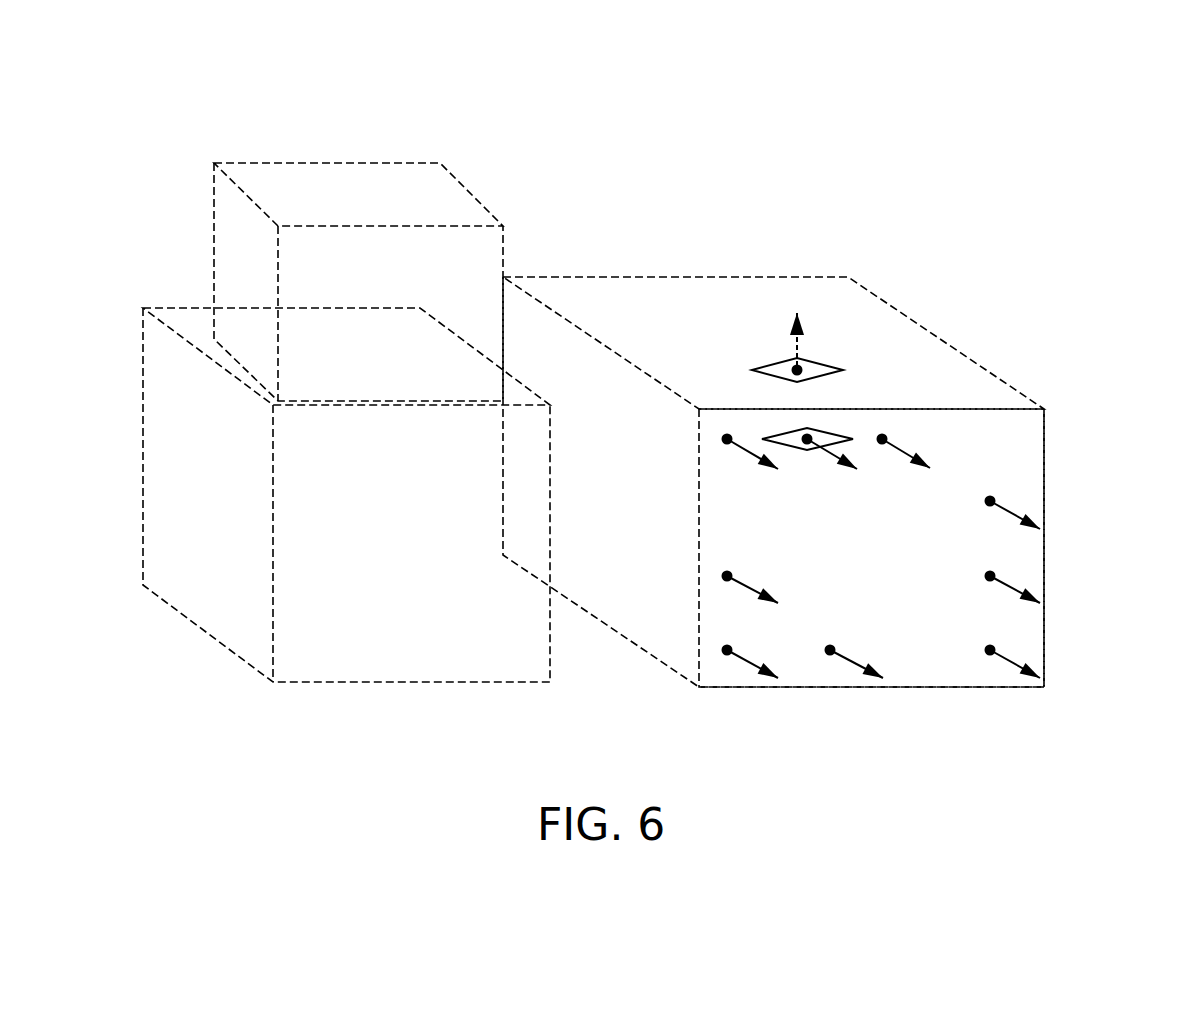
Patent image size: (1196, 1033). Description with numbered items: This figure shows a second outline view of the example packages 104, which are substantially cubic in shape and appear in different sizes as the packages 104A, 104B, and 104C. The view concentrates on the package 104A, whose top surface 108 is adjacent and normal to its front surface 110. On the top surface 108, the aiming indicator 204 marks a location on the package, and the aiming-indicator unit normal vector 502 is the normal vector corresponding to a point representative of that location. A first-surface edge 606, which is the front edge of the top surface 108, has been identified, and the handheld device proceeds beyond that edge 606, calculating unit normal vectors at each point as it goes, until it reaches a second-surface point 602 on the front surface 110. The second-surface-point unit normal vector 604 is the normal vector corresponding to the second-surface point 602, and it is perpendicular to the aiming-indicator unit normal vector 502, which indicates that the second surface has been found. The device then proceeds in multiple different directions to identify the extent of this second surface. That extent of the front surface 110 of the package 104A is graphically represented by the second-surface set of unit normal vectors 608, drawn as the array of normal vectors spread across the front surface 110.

The packages 104 is at (125, 115).
The package 104A is at (1060, 543).
The package 104B is at (195, 240).
The package 104C is at (130, 455).
The top surface 108 is at (773, 343).
The front surface 110 is at (871, 548).
The aiming indicator 204 is at (762, 365).
The aiming-indicator unit normal vector 502 is at (799, 338).
The second-surface point 602 is at (790, 432).
The second-surface-point unit normal vector 604 is at (826, 452).
The first-surface edge 606 is at (927, 409).
The second-surface set of unit normal vectors 608 is at (1109, 420).